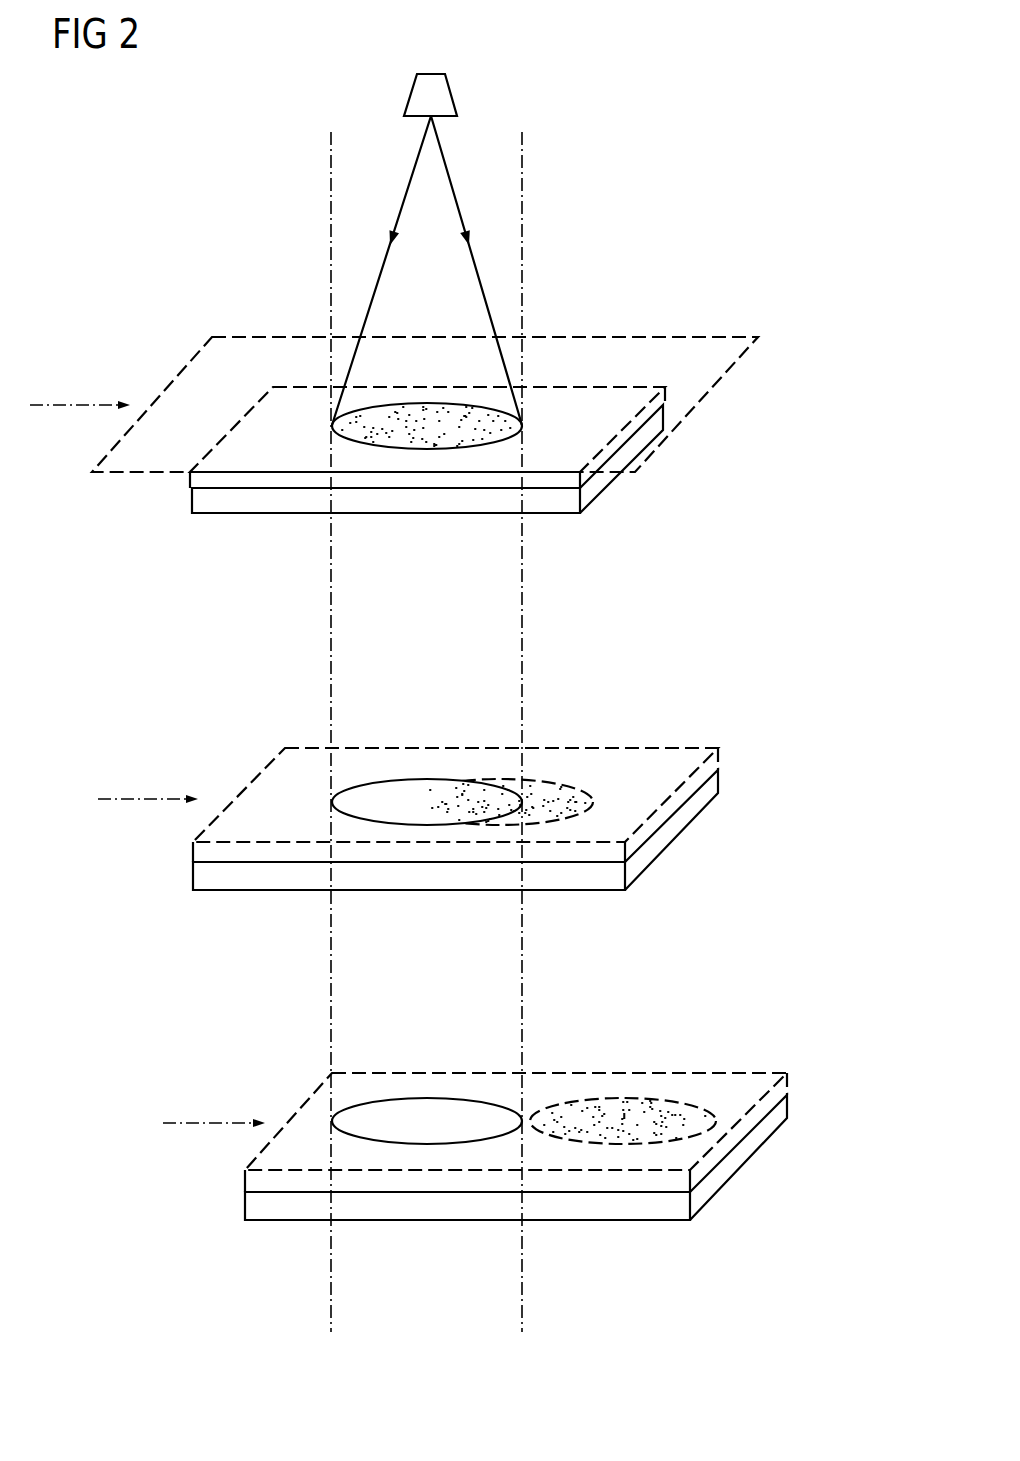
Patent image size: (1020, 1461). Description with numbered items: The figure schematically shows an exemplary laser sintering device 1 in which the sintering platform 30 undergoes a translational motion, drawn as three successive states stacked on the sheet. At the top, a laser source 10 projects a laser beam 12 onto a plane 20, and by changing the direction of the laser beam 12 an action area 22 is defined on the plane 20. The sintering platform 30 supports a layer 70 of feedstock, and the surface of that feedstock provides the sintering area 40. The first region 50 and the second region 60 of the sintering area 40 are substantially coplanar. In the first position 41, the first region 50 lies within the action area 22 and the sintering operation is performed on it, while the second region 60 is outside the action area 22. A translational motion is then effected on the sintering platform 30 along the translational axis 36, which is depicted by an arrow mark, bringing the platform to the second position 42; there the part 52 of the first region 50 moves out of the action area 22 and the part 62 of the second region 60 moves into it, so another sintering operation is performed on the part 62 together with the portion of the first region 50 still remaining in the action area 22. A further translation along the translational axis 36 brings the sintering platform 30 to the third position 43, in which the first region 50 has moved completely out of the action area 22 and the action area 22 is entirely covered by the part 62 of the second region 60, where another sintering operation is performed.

The laser sintering device 1 is at (594, 310).
The laser source 10 is at (440, 93).
The laser beam 12 is at (415, 158).
The plane 20 is at (728, 370).
The action area 22 is at (472, 392).
The sintering platform 30 is at (598, 490).
The translational axis 36 is at (82, 403).
The sintering area 40 is at (652, 418).
The first position 41 is at (684, 243).
The second position 42 is at (697, 695).
The third position 43 is at (727, 1013).
The first region 50 is at (417, 403).
The part of the first region 52 is at (555, 790).
The second region 60 is at (262, 447).
The part of the second region 62 is at (367, 800).
The layer of feedstock 70 is at (200, 478).